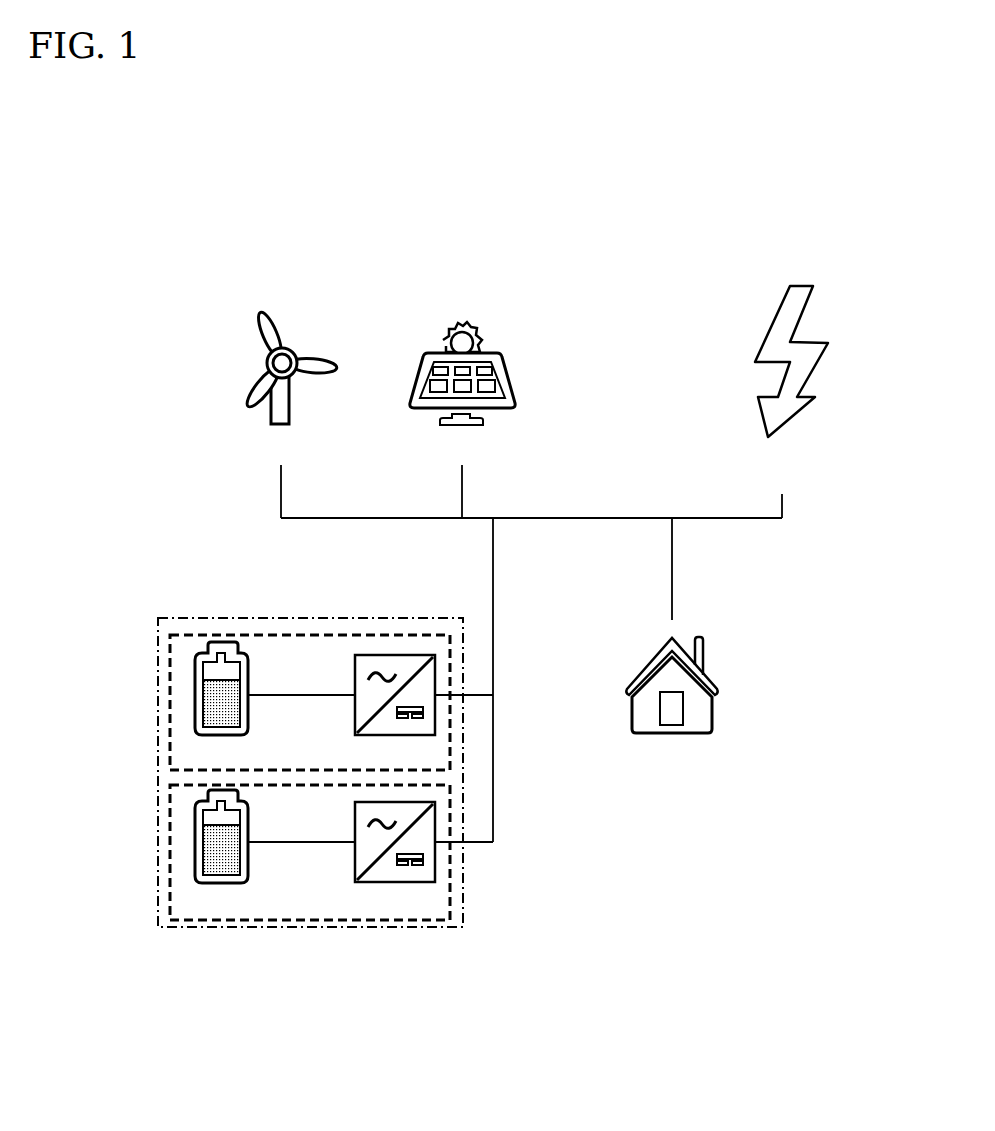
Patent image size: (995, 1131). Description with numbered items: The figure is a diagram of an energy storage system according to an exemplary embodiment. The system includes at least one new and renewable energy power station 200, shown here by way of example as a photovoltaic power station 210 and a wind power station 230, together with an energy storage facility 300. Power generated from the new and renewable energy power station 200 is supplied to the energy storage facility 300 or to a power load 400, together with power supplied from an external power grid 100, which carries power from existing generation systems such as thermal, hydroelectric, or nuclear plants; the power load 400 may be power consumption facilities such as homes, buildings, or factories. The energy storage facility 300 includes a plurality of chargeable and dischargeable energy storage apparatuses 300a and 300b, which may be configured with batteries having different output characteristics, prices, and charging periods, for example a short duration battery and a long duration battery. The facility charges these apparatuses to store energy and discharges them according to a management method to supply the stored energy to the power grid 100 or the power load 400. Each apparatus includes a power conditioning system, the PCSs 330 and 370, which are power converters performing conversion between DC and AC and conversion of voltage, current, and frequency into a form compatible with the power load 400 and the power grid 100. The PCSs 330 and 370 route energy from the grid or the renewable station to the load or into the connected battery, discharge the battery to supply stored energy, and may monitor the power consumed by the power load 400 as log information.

The external power grid 100 is at (800, 284).
The new and renewable energy power station 200 is at (430, 197).
The photovoltaic power station 210 is at (462, 326).
The wind power station 230 is at (277, 313).
The energy storage facility 300 is at (200, 617).
The energy storage apparatus 300a is at (170, 690).
The energy storage apparatus 300b is at (170, 838).
The power conditioning system (PCS) 330 is at (395, 655).
The power conditioning system (PCS) 370 is at (353, 858).
The power load 400 is at (713, 712).